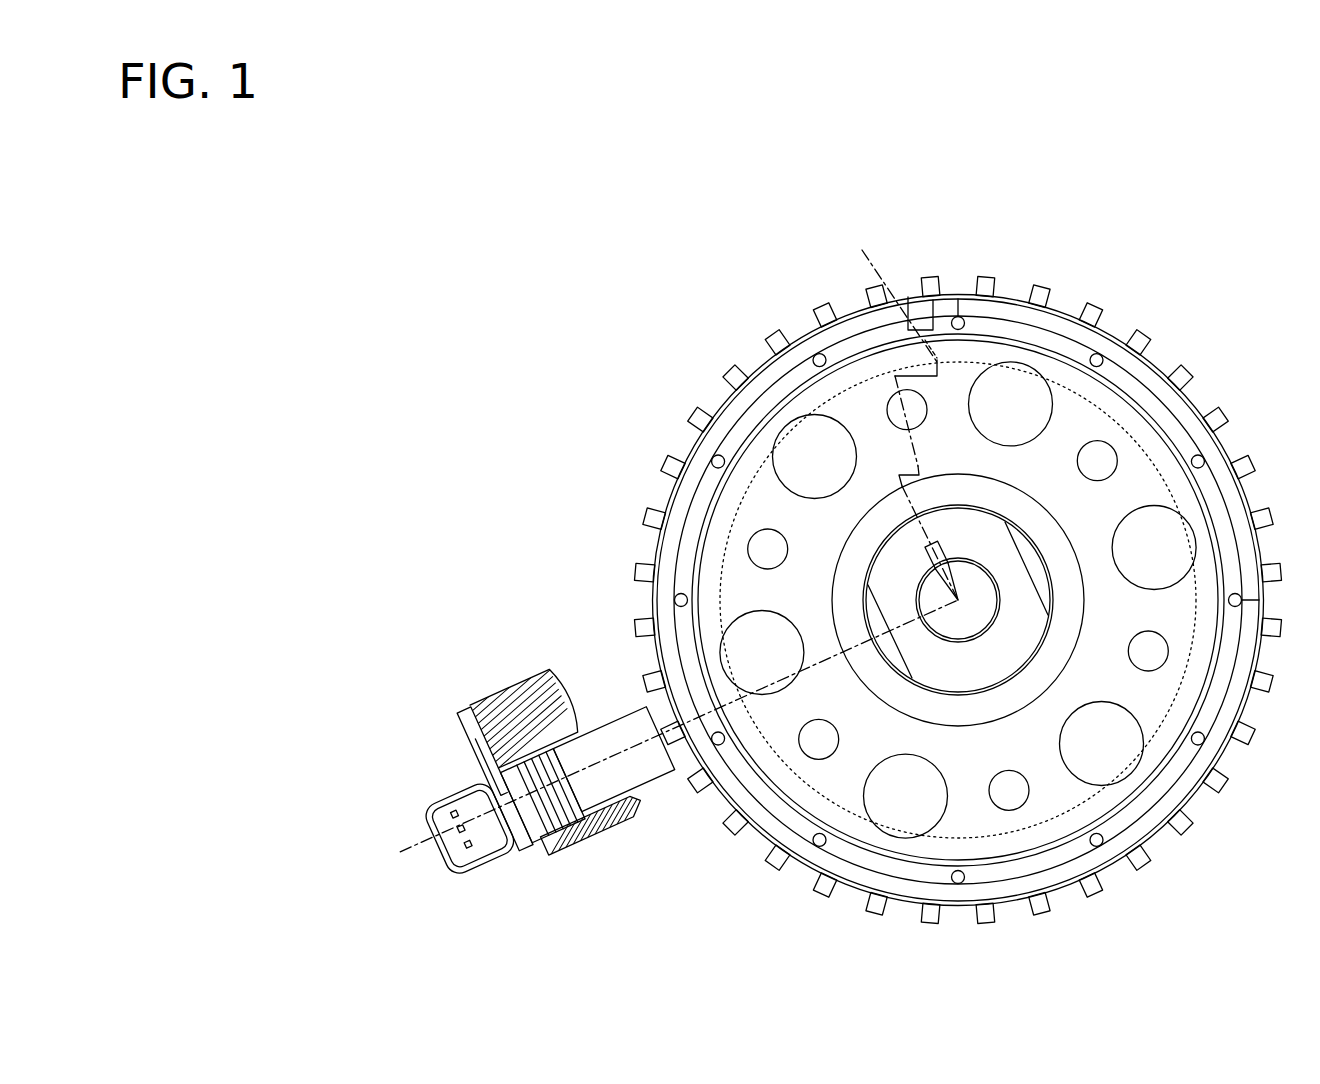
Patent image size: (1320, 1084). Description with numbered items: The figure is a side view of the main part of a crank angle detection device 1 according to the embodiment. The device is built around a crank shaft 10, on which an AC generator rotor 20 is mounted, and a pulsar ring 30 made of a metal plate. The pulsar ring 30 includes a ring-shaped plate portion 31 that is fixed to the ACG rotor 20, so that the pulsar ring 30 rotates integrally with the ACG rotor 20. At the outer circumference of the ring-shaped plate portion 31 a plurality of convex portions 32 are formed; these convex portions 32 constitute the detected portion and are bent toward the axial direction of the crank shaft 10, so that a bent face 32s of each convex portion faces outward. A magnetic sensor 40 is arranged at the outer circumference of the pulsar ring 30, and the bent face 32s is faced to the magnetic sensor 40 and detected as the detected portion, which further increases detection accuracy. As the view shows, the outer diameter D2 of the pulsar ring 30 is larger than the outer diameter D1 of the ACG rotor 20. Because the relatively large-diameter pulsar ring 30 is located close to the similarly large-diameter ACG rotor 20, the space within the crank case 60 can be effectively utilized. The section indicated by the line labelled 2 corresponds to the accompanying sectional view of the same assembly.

The crank angle detection device 1 is at (488, 492).
The section line 2- 2 is at (862, 250).
The crank shaft 10 is at (958, 600).
The AC generator rotor 20 is at (803, 330).
The pulsar ring 30 is at (730, 358).
The ring-shaped plate portion 31 is at (787, 435).
The convex portions 32 is at (730, 833).
The bent face 32s is at (688, 790).
The magnetic sensor 40 is at (608, 722).
The crank case 60 is at (517, 683).
The outer diameter of the ACG rotor D1 is at (649, 560).
The outer diameter of the pulsar ring D2 is at (1282, 560).